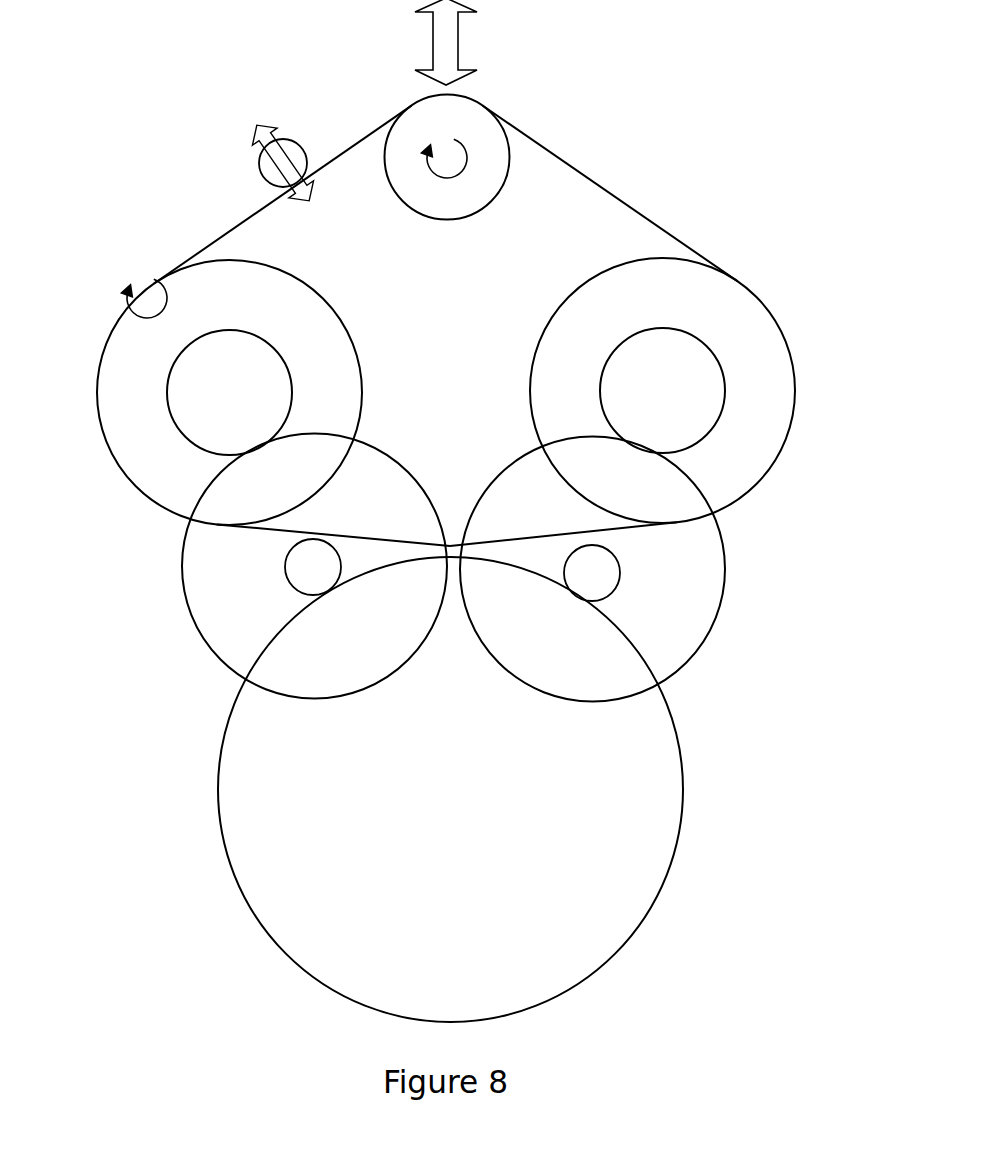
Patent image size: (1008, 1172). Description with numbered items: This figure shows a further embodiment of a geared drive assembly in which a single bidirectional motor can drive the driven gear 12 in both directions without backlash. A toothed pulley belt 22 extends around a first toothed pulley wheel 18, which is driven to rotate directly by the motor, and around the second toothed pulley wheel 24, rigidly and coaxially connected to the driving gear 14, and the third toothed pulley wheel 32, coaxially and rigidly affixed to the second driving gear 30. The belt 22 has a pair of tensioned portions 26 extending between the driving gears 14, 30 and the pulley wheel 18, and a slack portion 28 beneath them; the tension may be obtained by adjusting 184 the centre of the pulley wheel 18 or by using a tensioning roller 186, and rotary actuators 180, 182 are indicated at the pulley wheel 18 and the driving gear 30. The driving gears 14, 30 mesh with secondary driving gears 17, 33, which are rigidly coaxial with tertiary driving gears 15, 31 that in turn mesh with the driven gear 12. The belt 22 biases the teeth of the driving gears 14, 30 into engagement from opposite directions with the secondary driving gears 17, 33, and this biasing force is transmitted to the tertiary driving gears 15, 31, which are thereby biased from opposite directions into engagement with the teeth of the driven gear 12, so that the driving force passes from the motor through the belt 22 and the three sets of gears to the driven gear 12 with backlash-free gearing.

The driven gear 12 is at (470, 867).
The driving gear 14 is at (684, 410).
The tertiary driving gear 15 is at (606, 587).
The secondary driving gear 17 is at (546, 520).
The first toothed pulley wheel 18 is at (482, 125).
The toothed pulley belt 22 is at (648, 218).
The second toothed pulley wheel 24 is at (738, 470).
The tensioned portion 26 is at (360, 138).
The slack portion 28 is at (447, 540).
The second driving gear 30 is at (251, 410).
The tertiary driving gear 31 is at (327, 580).
The third toothed pulley wheel 32 is at (167, 470).
The secondary driving gear 33 is at (378, 507).
The rotary actuator 180 is at (758, 268).
The rotary actuator 182 is at (122, 270).
The adjusting 184 is at (448, 42).
The tensioning roller 186 is at (259, 168).